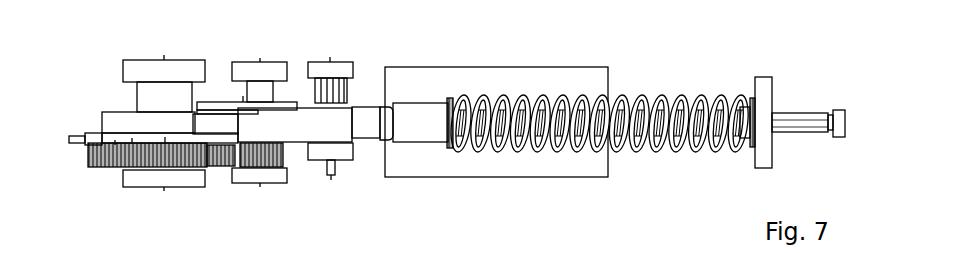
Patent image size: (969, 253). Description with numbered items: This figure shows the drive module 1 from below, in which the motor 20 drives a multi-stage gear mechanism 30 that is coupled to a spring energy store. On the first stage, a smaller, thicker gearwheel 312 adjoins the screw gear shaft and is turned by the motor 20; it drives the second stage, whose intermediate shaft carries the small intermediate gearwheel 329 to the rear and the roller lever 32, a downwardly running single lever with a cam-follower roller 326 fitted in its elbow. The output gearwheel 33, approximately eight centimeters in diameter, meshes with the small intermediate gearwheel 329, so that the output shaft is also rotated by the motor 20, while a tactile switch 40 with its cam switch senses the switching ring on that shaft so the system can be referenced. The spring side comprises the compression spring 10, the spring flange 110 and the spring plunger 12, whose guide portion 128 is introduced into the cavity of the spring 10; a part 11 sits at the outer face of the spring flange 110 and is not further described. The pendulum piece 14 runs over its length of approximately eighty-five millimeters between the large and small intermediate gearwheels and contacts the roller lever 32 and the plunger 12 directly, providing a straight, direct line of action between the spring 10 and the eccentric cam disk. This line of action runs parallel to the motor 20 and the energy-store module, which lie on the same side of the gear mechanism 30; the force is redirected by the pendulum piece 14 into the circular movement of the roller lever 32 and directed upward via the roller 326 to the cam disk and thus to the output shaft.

The drive unit 1 is at (150, 204).
The spring 10 is at (655, 127).
The bolt 11 is at (807, 122).
The spring plunger 12 is at (420, 122).
The pendulum piece 14 is at (325, 130).
The motor 20 is at (538, 85).
The gear mechanism 30 is at (110, 75).
The roller lever 32 is at (213, 107).
The output gearwheel 33 is at (90, 167).
The tactile switch 40 is at (86, 133).
The spring flange 110 is at (762, 141).
The guide portion 128 is at (525, 123).
The gearwheel 312 is at (333, 90).
The cam-follower roller 326 is at (203, 155).
The small intermediate gearwheel 329 is at (275, 155).